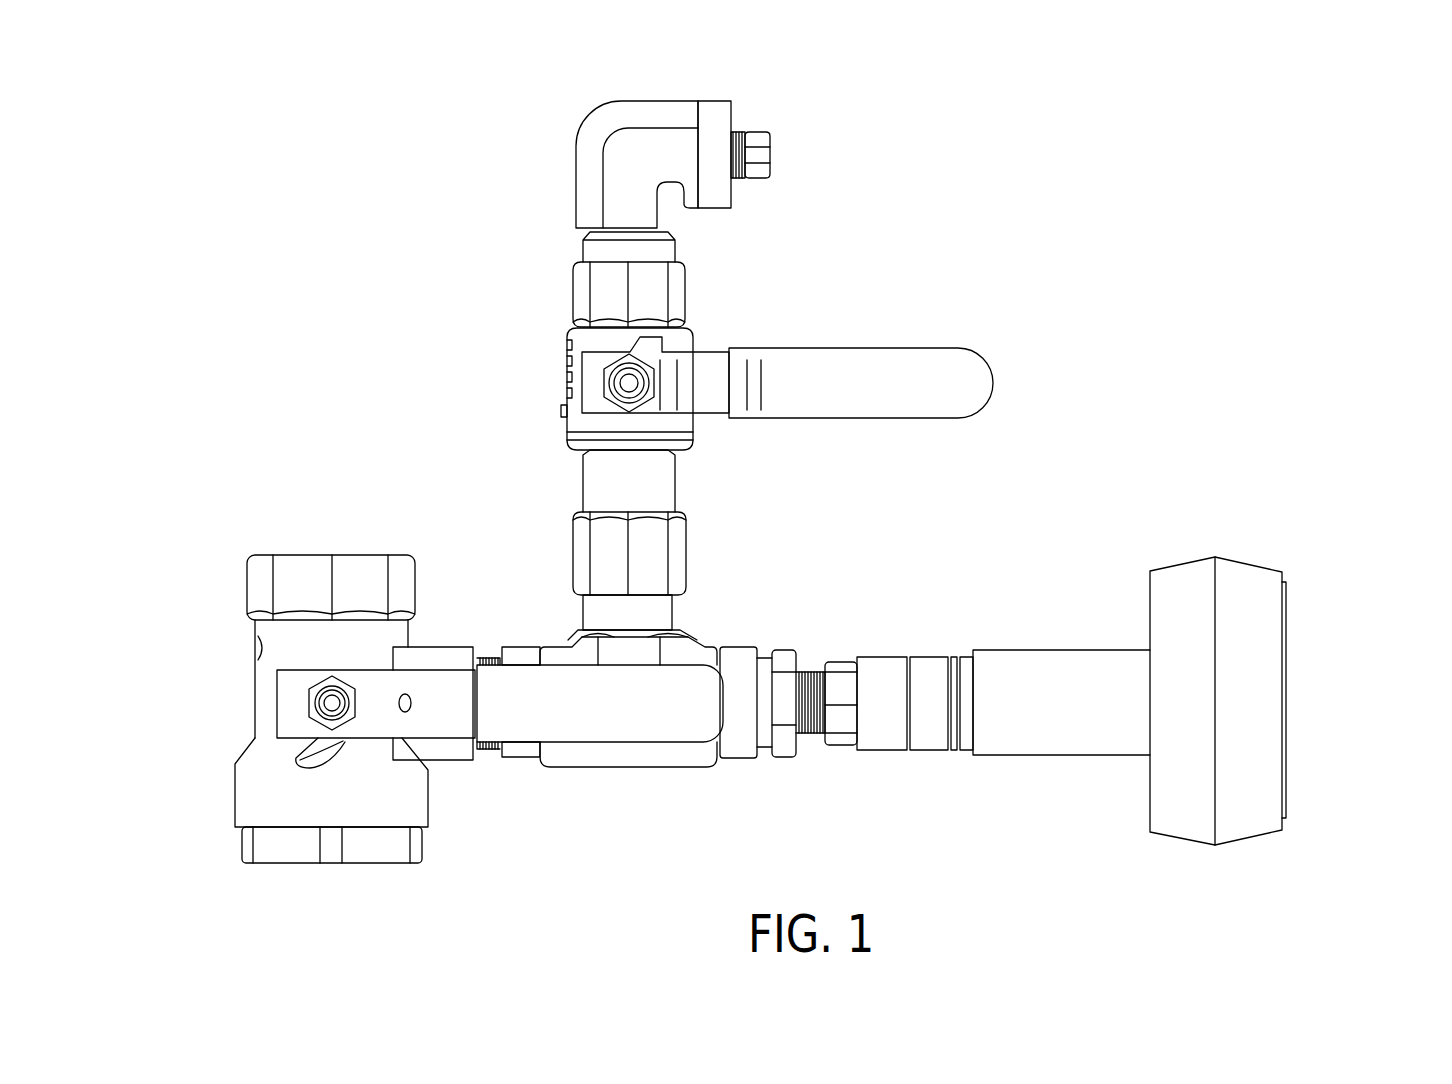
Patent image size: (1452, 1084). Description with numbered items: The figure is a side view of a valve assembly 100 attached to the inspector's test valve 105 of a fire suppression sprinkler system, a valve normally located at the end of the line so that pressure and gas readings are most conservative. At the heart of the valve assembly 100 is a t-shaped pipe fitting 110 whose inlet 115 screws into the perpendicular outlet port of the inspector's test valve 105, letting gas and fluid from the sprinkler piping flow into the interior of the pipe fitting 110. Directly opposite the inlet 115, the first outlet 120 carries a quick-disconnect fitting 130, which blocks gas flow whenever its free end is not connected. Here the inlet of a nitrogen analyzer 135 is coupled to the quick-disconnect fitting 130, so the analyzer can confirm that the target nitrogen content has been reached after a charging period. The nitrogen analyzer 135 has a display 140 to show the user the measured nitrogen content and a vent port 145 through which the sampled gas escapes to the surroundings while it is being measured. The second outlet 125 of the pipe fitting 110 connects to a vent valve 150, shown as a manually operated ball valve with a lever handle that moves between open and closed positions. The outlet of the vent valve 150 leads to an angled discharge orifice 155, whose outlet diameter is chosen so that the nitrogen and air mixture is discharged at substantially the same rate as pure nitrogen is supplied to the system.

The valve assembly 100 is at (396, 284).
The inspector's test valve 105 is at (258, 645).
The pipe fitting 110 is at (622, 768).
The inlet 115 is at (487, 752).
The first outlet 120 is at (780, 760).
The second outlet 125 is at (672, 608).
The quick-disconnect fitting 130 is at (883, 655).
The nitrogen analyzer 135 is at (1182, 557).
The display 140 is at (1286, 630).
The vent port 145 is at (941, 752).
The vent valve 150 is at (563, 412).
The discharge orifice 155 is at (757, 132).